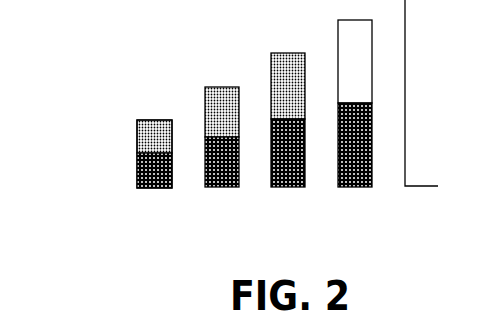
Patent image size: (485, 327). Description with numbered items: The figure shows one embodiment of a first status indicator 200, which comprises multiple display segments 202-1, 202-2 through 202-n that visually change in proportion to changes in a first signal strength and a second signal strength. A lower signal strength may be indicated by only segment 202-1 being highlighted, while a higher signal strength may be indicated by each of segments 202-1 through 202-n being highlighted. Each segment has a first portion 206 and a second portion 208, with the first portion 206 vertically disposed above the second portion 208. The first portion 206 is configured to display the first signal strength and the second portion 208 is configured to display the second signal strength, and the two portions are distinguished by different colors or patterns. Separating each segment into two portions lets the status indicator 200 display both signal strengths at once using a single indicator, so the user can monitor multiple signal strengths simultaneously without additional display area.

The status indicator 200 is at (147, 38).
The display segment 202-1 is at (158, 197).
The display segment 202-2 is at (228, 197).
The display segment 202-n is at (427, 197).
The first portion 206 is at (133, 138).
The second portion 208 is at (133, 167).